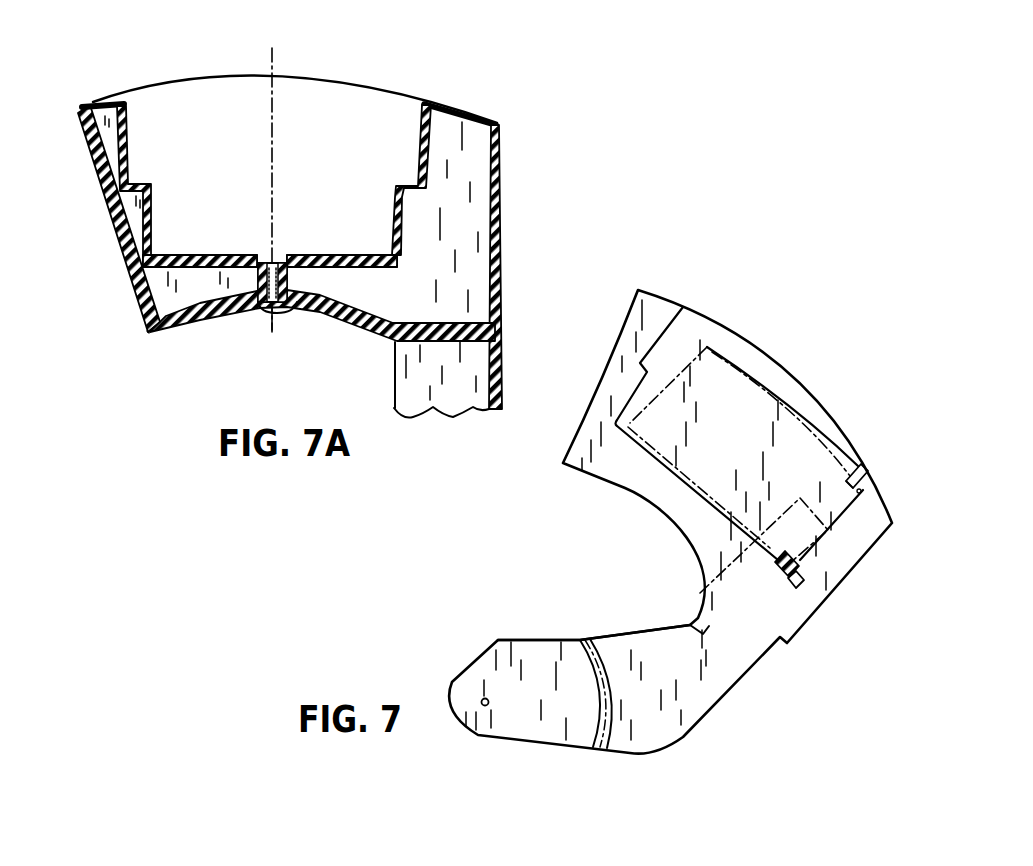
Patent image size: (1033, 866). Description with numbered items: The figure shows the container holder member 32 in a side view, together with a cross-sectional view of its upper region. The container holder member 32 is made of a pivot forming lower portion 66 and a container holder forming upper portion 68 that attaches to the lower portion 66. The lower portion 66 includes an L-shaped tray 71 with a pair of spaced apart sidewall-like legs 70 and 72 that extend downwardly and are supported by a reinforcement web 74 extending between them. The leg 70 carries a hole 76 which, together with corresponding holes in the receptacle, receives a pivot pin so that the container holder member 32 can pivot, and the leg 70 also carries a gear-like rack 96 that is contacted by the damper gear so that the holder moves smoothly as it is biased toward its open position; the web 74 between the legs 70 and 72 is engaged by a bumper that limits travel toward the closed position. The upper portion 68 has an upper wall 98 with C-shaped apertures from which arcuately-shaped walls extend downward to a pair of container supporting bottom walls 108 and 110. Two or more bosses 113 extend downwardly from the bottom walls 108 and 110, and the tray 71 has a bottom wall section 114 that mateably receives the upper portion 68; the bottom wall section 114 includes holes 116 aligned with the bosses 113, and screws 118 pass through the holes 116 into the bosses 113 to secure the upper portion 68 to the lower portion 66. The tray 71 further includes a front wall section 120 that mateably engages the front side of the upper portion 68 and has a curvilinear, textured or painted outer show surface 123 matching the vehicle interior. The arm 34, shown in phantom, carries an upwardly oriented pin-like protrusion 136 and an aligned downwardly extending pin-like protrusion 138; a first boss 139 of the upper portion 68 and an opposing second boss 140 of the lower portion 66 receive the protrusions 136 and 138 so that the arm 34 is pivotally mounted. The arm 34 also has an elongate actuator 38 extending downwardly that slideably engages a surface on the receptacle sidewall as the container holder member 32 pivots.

In FIG. 7A, the upper portion 68 is at (232, 70).
In FIG. 7A, the upper wall 98 is at (470, 118).
In FIG. 7A, the outer show surface 123 is at (99, 177).
In FIG. 7A, the front wall section 120 is at (117, 200).
In FIG. 7A, the container supporting bottom wall 108 is at (330, 255).
In FIG. 7A, the container supporting bottom wall 110 is at (330, 255).
In FIG. 7A, the boss 113 is at (290, 283).
In FIG. 7A, the bottom wall section 114 is at (192, 322).
In FIG. 7A, the hole 116 is at (287, 315).
In FIG. 7A, the screw 118 is at (268, 320).
In FIG. 7A, the L-shaped tray 71 is at (140, 308).
In FIG. 7A, the lower portion 66 is at (143, 338).
In FIG. 7A, the leg 72 is at (393, 383).
In FIG. 7A, the reinforcement web 74 is at (503, 393).
In FIG. 7, the container holder member 32 is at (657, 287).
In FIG. 7, the arm 34 is at (745, 373).
In FIG. 7, the actuator 38 is at (710, 623).
In FIG. 7, the pin-like protrusion 136 is at (853, 496).
In FIG. 7, the first boss 139 is at (863, 492).
In FIG. 7, the pin-like protrusion 138 is at (792, 558).
In FIG. 7, the second boss 140 is at (800, 589).
In FIG. 7, the leg 70 is at (537, 637).
In FIG. 7, the hole 76 is at (489, 700).
In FIG. 7, the gear-like rack 96 is at (612, 683).